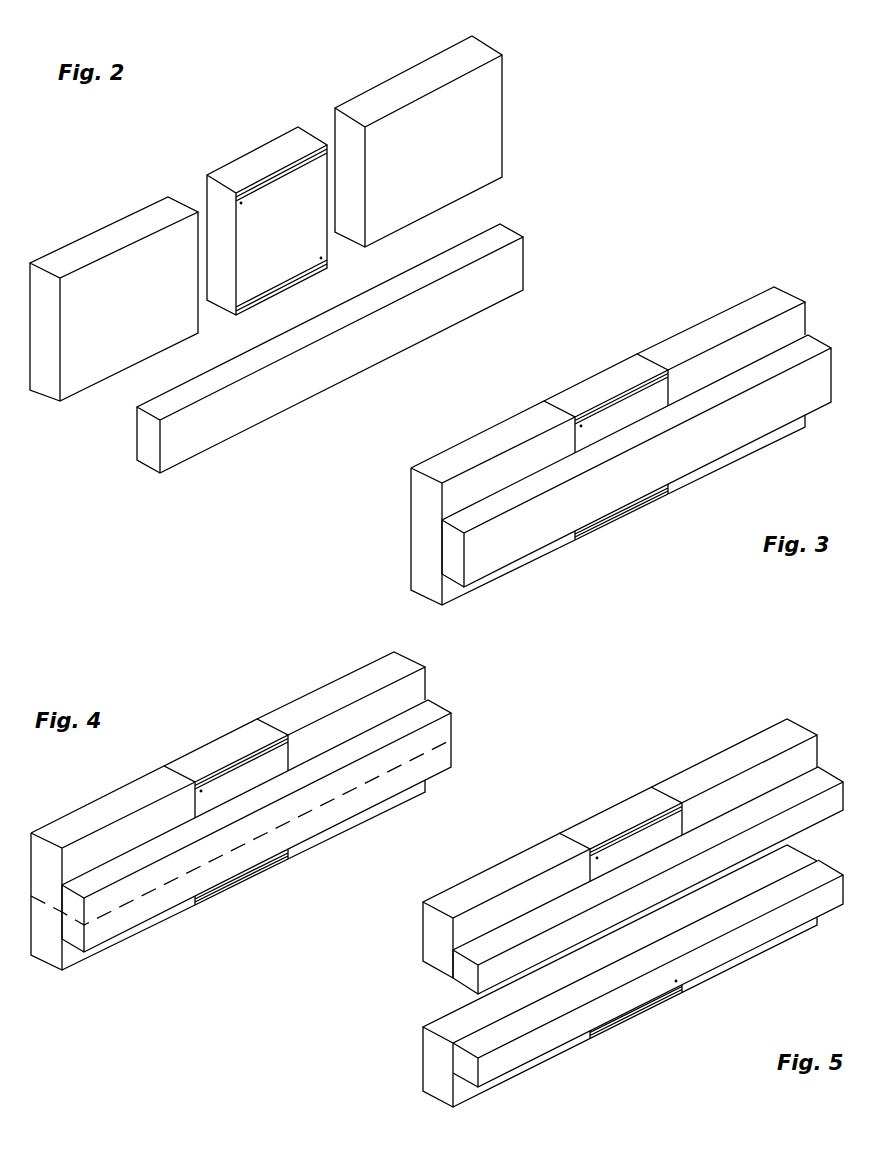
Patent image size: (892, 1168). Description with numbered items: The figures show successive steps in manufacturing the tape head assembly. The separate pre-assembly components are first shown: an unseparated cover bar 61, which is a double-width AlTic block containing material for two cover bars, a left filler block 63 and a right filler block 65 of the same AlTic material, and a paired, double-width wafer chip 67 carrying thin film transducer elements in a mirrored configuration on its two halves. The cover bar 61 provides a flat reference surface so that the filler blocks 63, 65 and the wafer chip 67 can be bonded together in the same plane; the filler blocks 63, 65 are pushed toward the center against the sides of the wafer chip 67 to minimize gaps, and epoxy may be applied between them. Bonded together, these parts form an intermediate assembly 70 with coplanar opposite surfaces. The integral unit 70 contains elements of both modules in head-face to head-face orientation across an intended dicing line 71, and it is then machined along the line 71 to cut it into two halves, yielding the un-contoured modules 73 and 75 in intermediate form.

In FIG. 2, the cover bar 61 is at (520, 227).
In FIG. 3, the cover bar 61 is at (533, 528).
In FIG. 2, the left filler block 63 is at (106, 222).
In FIG. 3, the left filler block 63 is at (500, 420).
In FIG. 2, the right filler block 65 is at (503, 118).
In FIG. 3, the right filler block 65 is at (698, 320).
In FIG. 2, the wafer chip 67 is at (252, 155).
In FIG. 3, the wafer chip 67 is at (590, 375).
In FIG. 3, the intermediate assembly 70 is at (621, 443).
In FIG. 4, the intermediate assembly 70 is at (241, 793).
In FIG. 4, the dicing line 71 is at (241, 854).
In FIG. 5, the un-contoured module 73 is at (420, 934).
In FIG. 5, the un-contoured module 75 is at (422, 1058).